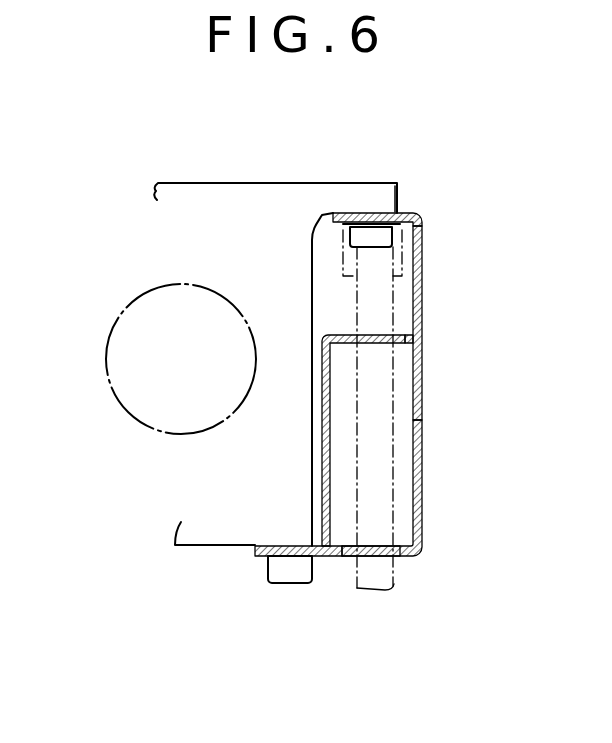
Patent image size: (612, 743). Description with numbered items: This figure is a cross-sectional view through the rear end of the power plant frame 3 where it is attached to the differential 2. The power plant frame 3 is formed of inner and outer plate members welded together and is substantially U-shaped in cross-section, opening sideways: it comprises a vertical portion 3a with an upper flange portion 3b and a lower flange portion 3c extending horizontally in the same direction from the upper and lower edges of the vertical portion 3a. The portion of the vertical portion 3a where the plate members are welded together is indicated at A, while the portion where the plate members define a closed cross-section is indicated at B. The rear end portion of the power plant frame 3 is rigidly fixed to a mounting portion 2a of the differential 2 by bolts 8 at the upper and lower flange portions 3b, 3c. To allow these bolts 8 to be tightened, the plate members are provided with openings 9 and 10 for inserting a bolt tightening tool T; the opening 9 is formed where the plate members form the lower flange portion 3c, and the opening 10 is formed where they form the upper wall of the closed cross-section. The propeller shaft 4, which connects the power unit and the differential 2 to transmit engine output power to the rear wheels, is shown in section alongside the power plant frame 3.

The differential 2 is at (205, 179).
The mounting portion 2a is at (372, 182).
The power plant frame 3 is at (346, 386).
The vertical portion 3a is at (423, 335).
The upper flange portion 3b is at (362, 213).
The lower flange portion 3c is at (257, 557).
The propeller shaft 4 is at (108, 382).
The bolt 8 is at (383, 248).
The opening 9 is at (343, 557).
The opening 10 is at (324, 380).
The welded portion of the vertical portion A is at (423, 284).
The closed cross-section portion B is at (410, 513).
The bolt tightening tool T is at (393, 570).